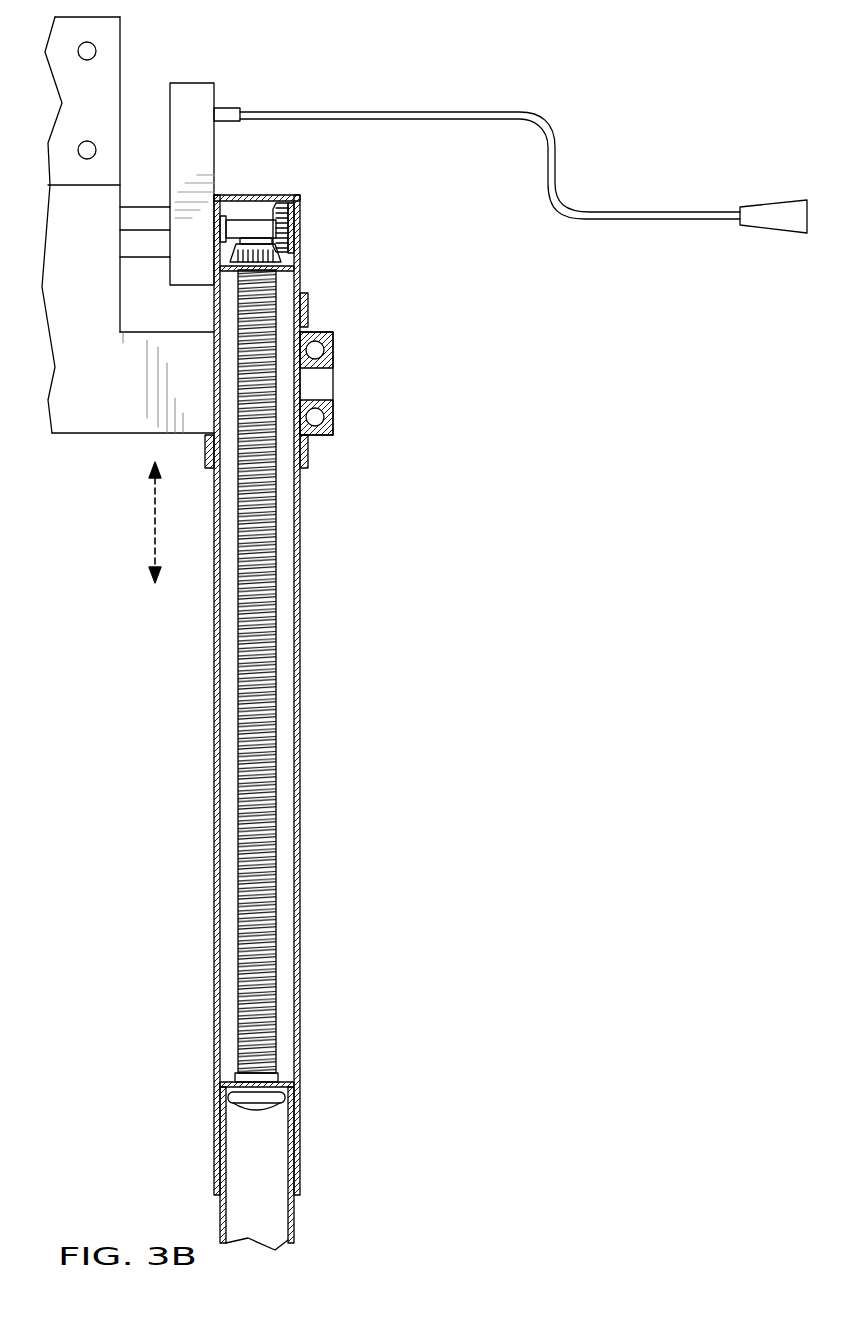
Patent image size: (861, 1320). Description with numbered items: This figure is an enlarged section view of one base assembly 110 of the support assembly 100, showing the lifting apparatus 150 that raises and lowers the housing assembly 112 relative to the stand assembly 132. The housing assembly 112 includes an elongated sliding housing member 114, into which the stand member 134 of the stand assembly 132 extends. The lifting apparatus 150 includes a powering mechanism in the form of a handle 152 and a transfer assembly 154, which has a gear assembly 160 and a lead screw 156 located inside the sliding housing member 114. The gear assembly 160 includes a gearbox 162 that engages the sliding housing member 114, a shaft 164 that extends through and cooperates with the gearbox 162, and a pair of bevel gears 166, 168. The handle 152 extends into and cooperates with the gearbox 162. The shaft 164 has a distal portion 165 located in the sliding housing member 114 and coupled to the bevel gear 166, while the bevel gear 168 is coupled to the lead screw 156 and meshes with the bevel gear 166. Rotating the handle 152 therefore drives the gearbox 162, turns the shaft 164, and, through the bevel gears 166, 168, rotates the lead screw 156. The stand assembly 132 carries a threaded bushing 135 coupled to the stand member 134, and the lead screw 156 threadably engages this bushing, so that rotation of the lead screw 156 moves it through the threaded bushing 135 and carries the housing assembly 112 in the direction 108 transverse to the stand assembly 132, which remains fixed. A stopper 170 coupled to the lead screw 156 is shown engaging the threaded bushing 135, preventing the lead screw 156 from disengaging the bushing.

The support assembly 100 is at (560, 805).
The direction 108 is at (152, 537).
The base assembly 110 is at (470, 673).
The housing assembly 112 is at (418, 350).
The sliding housing member 114 is at (300, 612).
The stand assembly 132 is at (326, 1140).
The stand member 134 is at (298, 1223).
The threaded bushing 135 is at (278, 1073).
The lifting apparatus 150 is at (462, 233).
The handle 152 is at (398, 110).
The transfer assembly 154 is at (150, 277).
The lead screw 156 is at (272, 308).
The gear assembly 160 is at (183, 298).
The gearbox 162 is at (197, 82).
The shaft 164 is at (238, 218).
The distal portion 165 is at (262, 227).
The bevel gear 166 is at (292, 218).
The bevel gear 168 is at (285, 253).
The stopper 170 is at (228, 1097).